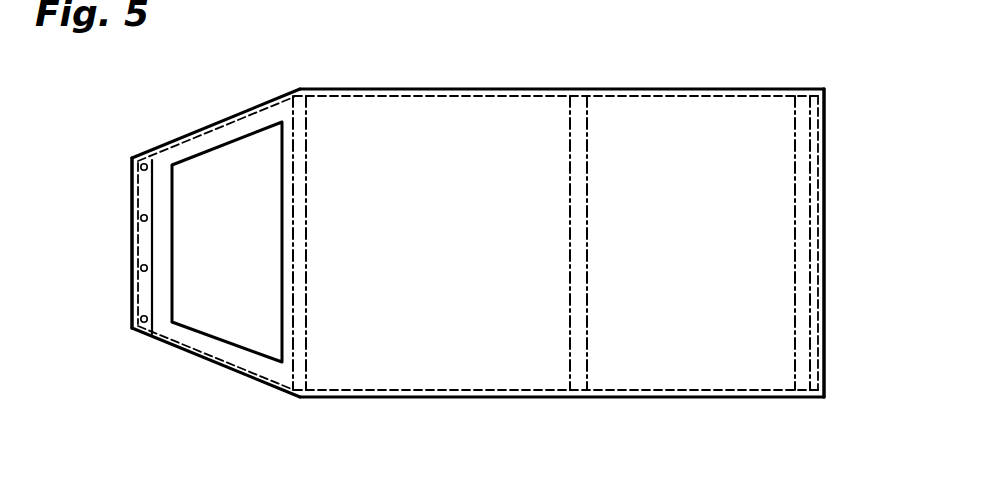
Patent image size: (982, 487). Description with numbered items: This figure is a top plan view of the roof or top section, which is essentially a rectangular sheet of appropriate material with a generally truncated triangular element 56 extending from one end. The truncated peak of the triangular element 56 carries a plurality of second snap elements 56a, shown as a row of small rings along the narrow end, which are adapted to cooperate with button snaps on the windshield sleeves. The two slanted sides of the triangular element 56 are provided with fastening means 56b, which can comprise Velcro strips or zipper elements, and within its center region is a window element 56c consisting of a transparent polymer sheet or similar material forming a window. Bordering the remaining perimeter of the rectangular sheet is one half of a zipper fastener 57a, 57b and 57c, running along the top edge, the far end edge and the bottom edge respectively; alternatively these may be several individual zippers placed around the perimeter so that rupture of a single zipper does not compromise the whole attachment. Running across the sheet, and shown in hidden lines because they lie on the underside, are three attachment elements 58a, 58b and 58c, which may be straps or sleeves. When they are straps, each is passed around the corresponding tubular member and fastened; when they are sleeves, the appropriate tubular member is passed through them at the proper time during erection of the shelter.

The truncated triangular element 56 is at (159, 178).
The second snap elements 56a is at (132, 213).
The fastening means 56b is at (257, 107).
The window element 56c is at (243, 187).
The zipper fastener half 57a is at (485, 84).
The zipper fastener half 57b is at (817, 190).
The zipper fastener half 57c is at (625, 400).
The attachment element 58a is at (305, 369).
The attachment element 58b is at (572, 374).
The attachment element 58c is at (797, 369).